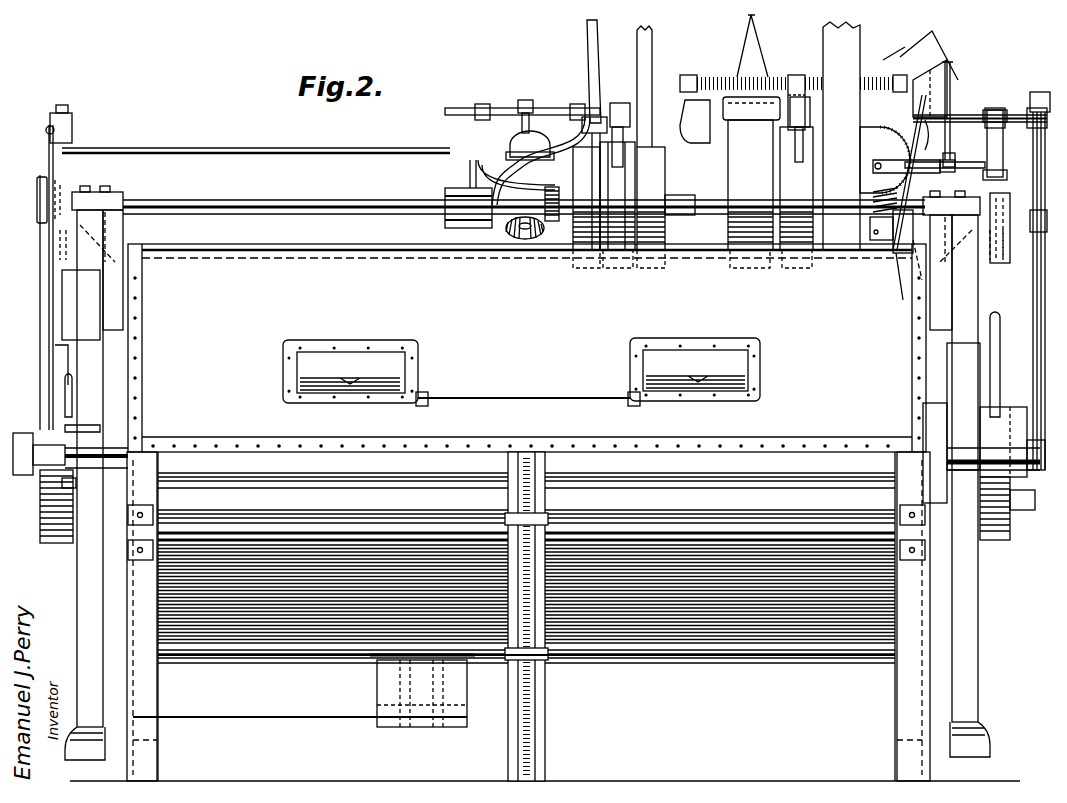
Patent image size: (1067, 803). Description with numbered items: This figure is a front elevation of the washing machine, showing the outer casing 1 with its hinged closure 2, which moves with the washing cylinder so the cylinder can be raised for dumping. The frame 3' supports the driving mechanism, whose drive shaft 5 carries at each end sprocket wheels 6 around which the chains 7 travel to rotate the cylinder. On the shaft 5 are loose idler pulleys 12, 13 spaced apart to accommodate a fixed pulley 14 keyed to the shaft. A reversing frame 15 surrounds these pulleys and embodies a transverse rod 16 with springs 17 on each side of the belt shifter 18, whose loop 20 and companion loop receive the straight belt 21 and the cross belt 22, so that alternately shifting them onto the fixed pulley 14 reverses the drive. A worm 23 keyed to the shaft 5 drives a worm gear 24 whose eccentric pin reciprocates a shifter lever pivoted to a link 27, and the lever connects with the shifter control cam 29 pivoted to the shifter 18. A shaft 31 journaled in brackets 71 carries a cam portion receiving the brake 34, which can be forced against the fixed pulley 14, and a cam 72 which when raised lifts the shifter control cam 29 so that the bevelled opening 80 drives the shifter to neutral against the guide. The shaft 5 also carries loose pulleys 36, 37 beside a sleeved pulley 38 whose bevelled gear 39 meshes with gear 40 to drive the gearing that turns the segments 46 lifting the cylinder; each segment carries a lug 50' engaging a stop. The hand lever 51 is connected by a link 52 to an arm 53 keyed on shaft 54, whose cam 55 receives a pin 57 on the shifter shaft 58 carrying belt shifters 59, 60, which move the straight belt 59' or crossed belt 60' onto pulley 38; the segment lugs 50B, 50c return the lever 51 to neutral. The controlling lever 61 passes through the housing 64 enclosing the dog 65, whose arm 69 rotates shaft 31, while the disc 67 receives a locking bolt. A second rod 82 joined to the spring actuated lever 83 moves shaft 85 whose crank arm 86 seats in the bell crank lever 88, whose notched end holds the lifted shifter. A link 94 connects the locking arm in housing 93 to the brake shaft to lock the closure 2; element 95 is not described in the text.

The outer casing 1 is at (680, 620).
The hinged closure 2 is at (527, 348).
The frame 3' is at (111, 258).
The drive shaft 5 is at (686, 200).
The sprocket wheels 6 is at (38, 186).
The chains 7 is at (55, 250).
The belt pulley 12 is at (873, 250).
The belt pulley 13 is at (730, 235).
The fixed pulley 14 is at (796, 197).
The reversing frame 15 is at (685, 125).
The transverse rod 16 is at (690, 75).
The springs 17 is at (725, 76).
The belt shifter 18 is at (797, 75).
The belt receiving loop 20 is at (750, 120).
The straight belt 21 is at (823, 27).
The cross belt 22 is at (745, 30).
The worm 23 is at (873, 197).
The worm gear 24 is at (880, 152).
The link 27 is at (870, 222).
The shifter control cam 29 is at (893, 50).
The shaft 31 is at (968, 115).
The brake 34 is at (810, 110).
The loose pulley 36 is at (665, 240).
The loose pulley 37 is at (583, 255).
The pulley 38 is at (620, 255).
The bevelled gear 39 is at (545, 192).
The gear 40 is at (522, 240).
The segments 46 is at (80, 617).
The lug 50' is at (542, 750).
The lug 50B is at (62, 483).
The second lug 50c is at (78, 424).
The hand lever 51 is at (64, 390).
The link 52 is at (55, 290).
The arm 53 is at (72, 127).
The shaft 54 is at (165, 146).
The cam 55 is at (525, 133).
The pin 57 is at (533, 110).
The shifter shaft 58 is at (470, 107).
The belt shifter 59 is at (654, 188).
The straight belt 59' is at (657, 86).
The belt shifter 60 is at (606, 123).
The crossed belt 60' is at (578, 135).
The controlling lever 61 is at (1000, 360).
The housing 64 is at (1010, 515).
The dog 65 is at (1035, 500).
The disc 67 is at (1007, 435).
The arm 69 is at (1033, 305).
The brackets 71 is at (1003, 145).
The cam 72 is at (935, 95).
The opening 80 is at (930, 35).
The second rod 82 is at (1041, 330).
The spring actuated lever 83 is at (1040, 470).
The shaft 85 is at (945, 175).
The crank arm 86 is at (955, 158).
The bell crank lever 88 is at (950, 75).
The housing 93 is at (897, 280).
The link 94 is at (920, 160).
The spring 95 is at (930, 135).